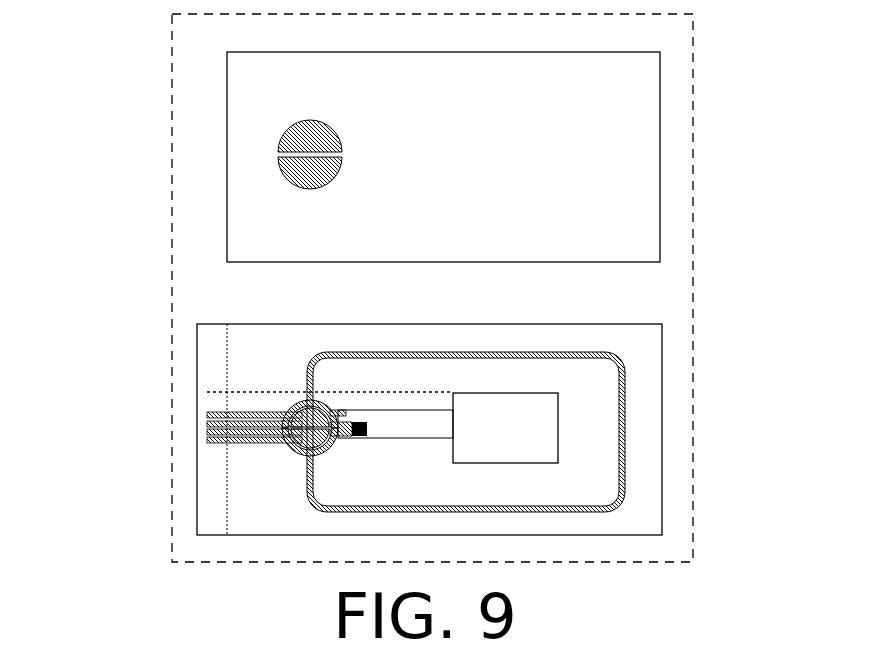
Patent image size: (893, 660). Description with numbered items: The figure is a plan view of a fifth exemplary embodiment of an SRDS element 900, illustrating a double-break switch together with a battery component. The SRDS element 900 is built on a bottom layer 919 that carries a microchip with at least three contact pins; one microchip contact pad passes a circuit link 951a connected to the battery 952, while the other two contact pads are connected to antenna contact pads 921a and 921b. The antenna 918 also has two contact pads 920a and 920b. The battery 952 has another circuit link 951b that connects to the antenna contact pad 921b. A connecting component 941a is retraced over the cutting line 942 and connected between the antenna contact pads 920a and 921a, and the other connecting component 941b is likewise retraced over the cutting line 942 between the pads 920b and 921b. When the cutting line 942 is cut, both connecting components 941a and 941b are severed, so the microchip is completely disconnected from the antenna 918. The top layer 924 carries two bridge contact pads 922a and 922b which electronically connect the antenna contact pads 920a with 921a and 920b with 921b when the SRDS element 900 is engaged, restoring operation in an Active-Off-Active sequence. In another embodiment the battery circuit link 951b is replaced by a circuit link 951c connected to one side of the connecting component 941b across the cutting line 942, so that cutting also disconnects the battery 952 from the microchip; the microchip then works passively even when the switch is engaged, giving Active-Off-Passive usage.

The SRDS element 900 is at (147, 78).
The top layer 924 is at (645, 130).
The bridge contact pad 922a is at (295, 123).
The bridge contact pad 922b is at (293, 182).
The bottom layer 919 is at (645, 400).
The antenna 918 is at (580, 505).
The battery 952 is at (546, 420).
The circuit link 951a is at (418, 442).
The circuit link 951b is at (415, 410).
The circuit link 951c is at (218, 392).
The connecting component 941a is at (207, 440).
The connecting component 941b is at (207, 416).
The cutting line 942 is at (227, 487).
The antenna contact pad 920a is at (292, 457).
The antenna contact pad 920b is at (298, 406).
The antenna contact pad 921a is at (330, 455).
The antenna contact pad 921b is at (323, 410).